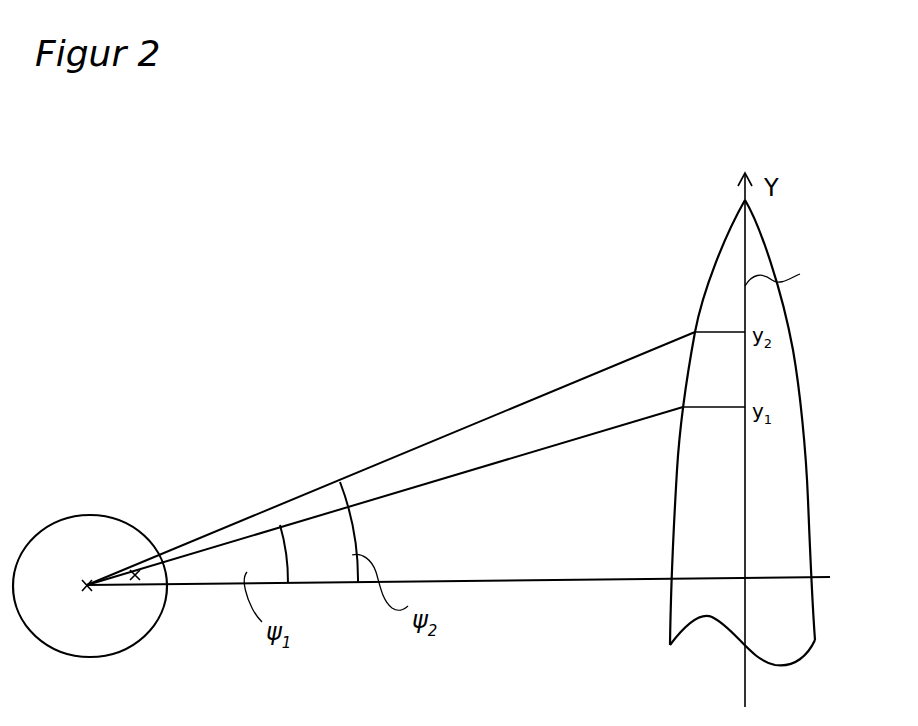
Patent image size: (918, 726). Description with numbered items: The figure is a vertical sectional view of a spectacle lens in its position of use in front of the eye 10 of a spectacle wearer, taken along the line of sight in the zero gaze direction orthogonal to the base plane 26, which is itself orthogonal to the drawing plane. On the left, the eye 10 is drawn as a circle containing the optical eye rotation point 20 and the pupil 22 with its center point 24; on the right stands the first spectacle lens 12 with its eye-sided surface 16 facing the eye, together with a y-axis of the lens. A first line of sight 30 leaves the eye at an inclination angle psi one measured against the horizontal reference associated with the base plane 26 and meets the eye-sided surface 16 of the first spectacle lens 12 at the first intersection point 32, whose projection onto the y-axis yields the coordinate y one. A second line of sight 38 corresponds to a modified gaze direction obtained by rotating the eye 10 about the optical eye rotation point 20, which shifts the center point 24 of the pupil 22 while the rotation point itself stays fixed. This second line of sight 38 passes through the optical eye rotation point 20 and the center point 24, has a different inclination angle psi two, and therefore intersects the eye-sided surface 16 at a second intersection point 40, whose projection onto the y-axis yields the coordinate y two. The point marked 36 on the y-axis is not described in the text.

The eye 10 is at (92, 532).
The first spectacle lens 12 is at (790, 446).
The eye-sided surface 16 is at (673, 498).
The optical eye rotation point 20 is at (86, 588).
The pupil 22 is at (146, 594).
The center point of the pupil 24 is at (136, 572).
The base plane 26 is at (540, 582).
The first line of sight 30 is at (530, 455).
The first intersection point 32 is at (682, 407).
The point on Y axis 36 is at (788, 274).
The second line of sight 38 is at (462, 425).
The second intersection point 40 is at (694, 332).